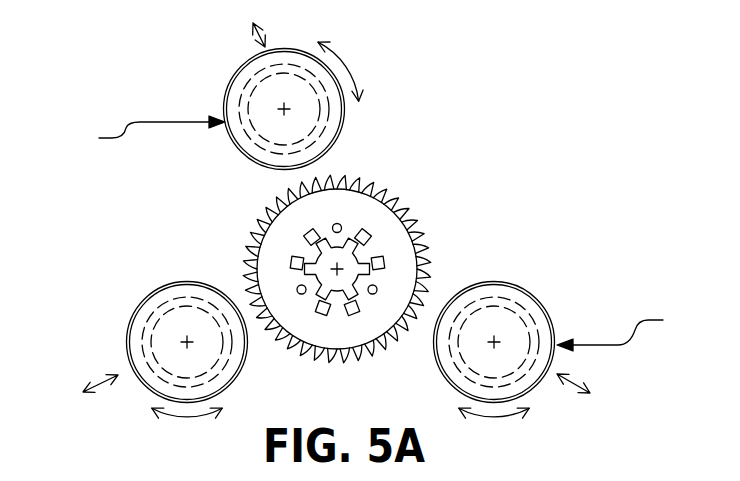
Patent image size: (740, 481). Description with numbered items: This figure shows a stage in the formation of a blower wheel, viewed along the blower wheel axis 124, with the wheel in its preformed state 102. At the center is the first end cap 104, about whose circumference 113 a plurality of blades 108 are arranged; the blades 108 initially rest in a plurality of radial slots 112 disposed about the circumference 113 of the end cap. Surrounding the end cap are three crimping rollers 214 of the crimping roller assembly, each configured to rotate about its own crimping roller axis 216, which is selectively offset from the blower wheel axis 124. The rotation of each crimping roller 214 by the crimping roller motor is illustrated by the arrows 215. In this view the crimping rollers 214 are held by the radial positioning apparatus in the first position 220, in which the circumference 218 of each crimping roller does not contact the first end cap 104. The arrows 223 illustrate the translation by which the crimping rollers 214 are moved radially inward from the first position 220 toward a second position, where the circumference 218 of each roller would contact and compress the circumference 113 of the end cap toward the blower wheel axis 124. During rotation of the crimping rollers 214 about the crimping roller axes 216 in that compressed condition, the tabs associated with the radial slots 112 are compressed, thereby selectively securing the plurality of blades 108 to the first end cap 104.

The preformed state 102 is at (240, 195).
The first end cap 104 is at (390, 237).
The blades 108 is at (397, 203).
The radial slots 112 is at (358, 166).
The circumference of the end cap 113 is at (240, 240).
The blower wheel axis 124 is at (337, 269).
The crimping roller 214 is at (226, 95).
The crimping roller rotation arrows 215 is at (345, 64).
The crimping roller axis 216 is at (494, 342).
The circumference of the crimping roller 218 is at (380, 233).
The first position 220 is at (560, 74).
The translation arrows 223 is at (258, 36).